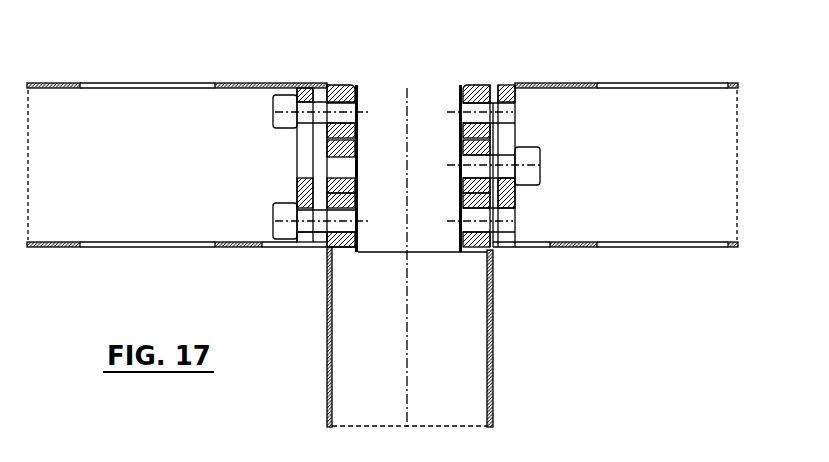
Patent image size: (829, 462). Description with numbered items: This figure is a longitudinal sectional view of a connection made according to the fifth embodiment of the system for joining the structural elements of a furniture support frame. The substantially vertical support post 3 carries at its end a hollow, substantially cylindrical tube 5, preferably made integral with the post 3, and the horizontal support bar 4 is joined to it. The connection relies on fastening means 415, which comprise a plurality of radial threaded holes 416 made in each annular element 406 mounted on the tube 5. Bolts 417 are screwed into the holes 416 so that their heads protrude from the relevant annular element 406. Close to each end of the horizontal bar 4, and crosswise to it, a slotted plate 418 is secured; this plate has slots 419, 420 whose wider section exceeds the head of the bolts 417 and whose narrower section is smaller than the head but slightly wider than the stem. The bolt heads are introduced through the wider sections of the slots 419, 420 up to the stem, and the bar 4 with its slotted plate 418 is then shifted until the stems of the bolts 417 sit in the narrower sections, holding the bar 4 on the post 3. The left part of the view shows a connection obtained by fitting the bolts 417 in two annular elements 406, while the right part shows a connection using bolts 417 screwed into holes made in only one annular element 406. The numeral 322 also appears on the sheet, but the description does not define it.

The support bar 4 is at (680, 68).
The support post 3 is at (507, 376).
The tube 5 is at (428, 242).
The coupling ring 322 is at (547, 8).
The annular element 406 is at (491, 68).
The fastening means 415 is at (298, 57).
The radial threaded hole 416 is at (358, 207).
The bolt 417 is at (320, 102).
The slotted plate 418 is at (273, 183).
The slot 419 is at (297, 148).
The slot 420 is at (307, 238).